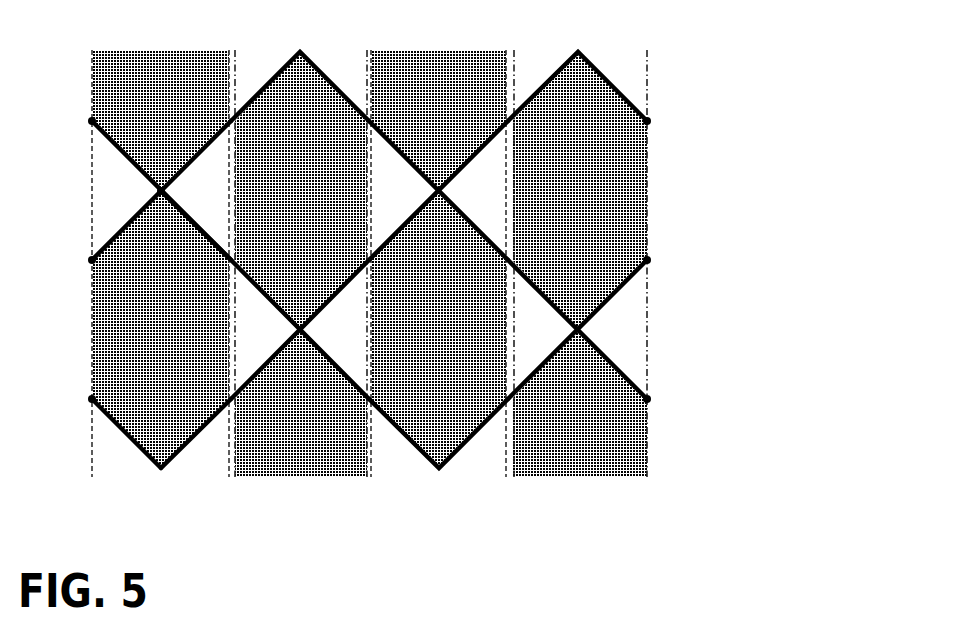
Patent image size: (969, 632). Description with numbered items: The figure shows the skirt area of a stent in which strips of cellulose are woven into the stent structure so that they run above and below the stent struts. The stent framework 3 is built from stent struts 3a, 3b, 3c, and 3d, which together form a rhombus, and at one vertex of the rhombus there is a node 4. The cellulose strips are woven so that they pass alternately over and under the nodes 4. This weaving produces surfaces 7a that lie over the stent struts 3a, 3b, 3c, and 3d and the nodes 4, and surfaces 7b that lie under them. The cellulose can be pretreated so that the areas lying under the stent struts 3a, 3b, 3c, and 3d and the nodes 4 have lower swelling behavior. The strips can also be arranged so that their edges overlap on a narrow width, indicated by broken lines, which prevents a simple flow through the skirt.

The stent framework 3 is at (648, 262).
The stent strut 3a is at (110, 418).
The stent strut 3b is at (132, 218).
The stent strut 3c is at (182, 205).
The stent strut 3d is at (193, 435).
The node 4 is at (161, 191).
The surface over stent struts 7a is at (438, 72).
The surface under stent struts 7b is at (632, 73).